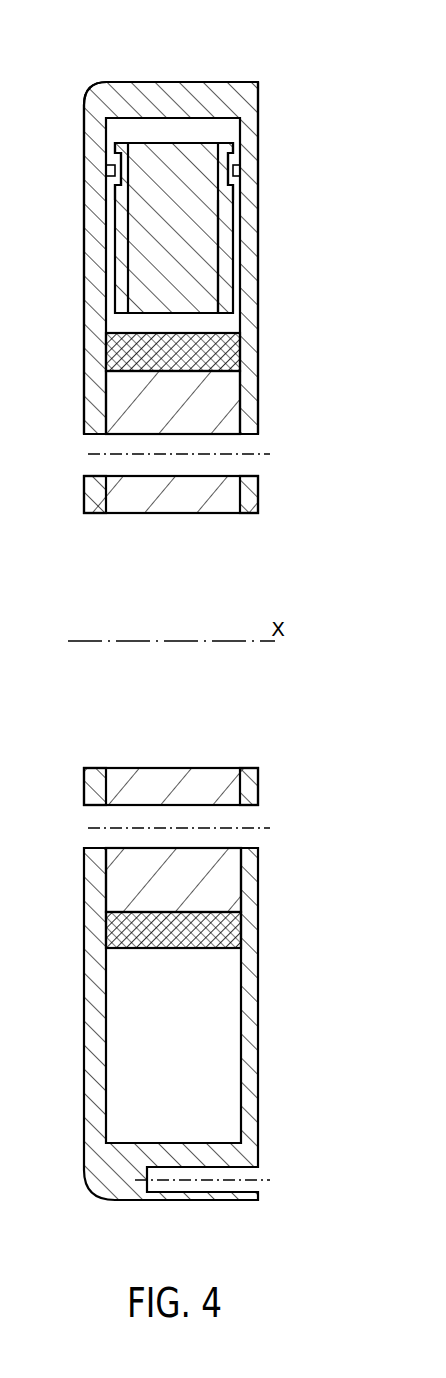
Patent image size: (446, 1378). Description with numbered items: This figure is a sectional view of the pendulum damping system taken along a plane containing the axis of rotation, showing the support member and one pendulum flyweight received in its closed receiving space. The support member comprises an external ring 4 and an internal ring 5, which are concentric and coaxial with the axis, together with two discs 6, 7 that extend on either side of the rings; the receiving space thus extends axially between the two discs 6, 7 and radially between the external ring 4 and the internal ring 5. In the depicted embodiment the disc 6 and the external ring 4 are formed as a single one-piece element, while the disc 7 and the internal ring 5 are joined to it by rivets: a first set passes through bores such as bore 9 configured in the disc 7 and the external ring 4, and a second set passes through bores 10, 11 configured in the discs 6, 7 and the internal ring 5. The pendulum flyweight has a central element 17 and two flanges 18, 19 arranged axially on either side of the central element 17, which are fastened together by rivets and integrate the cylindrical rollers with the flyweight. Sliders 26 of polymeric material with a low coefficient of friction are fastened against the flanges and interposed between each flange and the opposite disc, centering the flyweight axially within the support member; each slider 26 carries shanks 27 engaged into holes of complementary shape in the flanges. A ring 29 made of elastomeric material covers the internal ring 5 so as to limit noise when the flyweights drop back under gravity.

The external ring 4 is at (200, 100).
The internal ring 5 is at (200, 882).
The disc 6 is at (84, 210).
The disc 7 is at (250, 292).
The bore 9 is at (248, 1173).
The bore 10 is at (250, 465).
The bore 11 is at (164, 468).
The central element 17 is at (195, 170).
The flange 18 is at (225, 258).
The flange 19 is at (122, 142).
The slider 26 is at (240, 180).
The shank 27 is at (237, 168).
The ring made of elastomeric material 29 is at (240, 353).